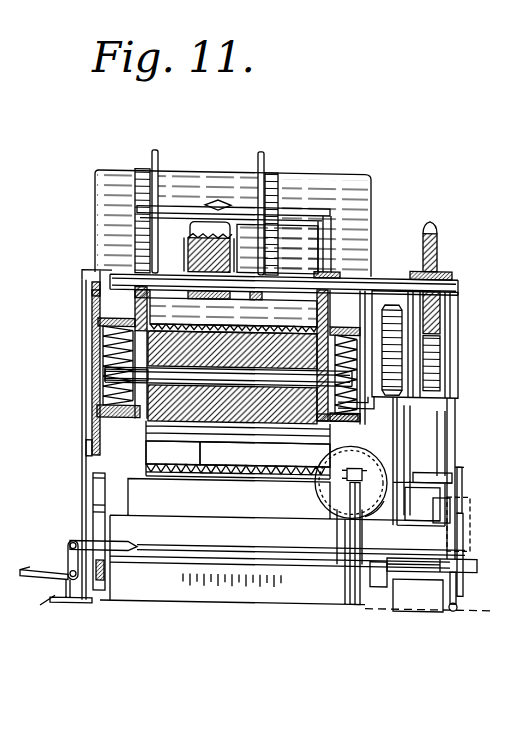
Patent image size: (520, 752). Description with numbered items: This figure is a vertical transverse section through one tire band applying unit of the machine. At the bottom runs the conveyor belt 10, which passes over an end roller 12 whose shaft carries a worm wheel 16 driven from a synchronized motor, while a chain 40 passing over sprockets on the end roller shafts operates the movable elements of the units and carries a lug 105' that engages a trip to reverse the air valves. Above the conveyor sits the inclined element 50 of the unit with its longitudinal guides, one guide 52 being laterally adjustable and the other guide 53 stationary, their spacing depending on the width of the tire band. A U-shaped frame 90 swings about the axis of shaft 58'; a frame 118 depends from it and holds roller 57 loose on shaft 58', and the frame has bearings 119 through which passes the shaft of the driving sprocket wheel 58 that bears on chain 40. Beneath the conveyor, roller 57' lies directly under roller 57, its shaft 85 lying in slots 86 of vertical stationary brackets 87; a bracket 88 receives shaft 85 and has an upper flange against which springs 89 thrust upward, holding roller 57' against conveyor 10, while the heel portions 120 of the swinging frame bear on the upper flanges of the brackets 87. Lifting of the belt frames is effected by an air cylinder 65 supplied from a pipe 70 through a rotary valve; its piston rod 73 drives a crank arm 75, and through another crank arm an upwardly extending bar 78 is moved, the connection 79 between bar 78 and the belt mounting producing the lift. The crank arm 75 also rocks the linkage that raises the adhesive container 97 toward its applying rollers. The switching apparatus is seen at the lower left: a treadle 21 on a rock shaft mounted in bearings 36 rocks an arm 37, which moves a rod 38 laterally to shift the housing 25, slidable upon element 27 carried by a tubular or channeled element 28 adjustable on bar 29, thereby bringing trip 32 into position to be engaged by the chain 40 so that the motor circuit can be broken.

The inclined element 50 is at (118, 172).
The stationary guide 53 is at (158, 150).
The laterally adjustable guide 52 is at (264, 150).
The U-shaped frame 90 is at (315, 206).
The bearings 119 is at (335, 264).
The frame 118 is at (188, 252).
The roller 57 is at (277, 248).
The shaft 58' is at (300, 289).
The sprocket wheel 58 is at (443, 250).
The worm wheel 16 is at (396, 300).
The vertical stationary bracket 87 is at (312, 346).
The slot 86 is at (200, 400).
The shaft 85 is at (106, 378).
The spring 89 is at (110, 368).
The bracket 88 is at (104, 338).
The heel portion 120 is at (92, 310).
The connection 79 is at (84, 283).
The upwardly extending bar 78 is at (86, 448).
The roller 57' is at (156, 448).
The end roller 12 is at (150, 455).
The conveyor belt 10 is at (228, 475).
The container 97 is at (128, 490).
The rod 38 is at (128, 541).
The arm 37 is at (68, 552).
The treadle 21 is at (34, 576).
The bearing 36 is at (54, 604).
The cylinder 65 is at (352, 444).
The piston rod 73 is at (347, 470).
The crank arm 75 is at (345, 500).
The lug 105' is at (450, 459).
The chain 40 is at (422, 504).
The trip 32 is at (463, 474).
The housing 25 is at (463, 528).
The element 27 is at (470, 568).
The tubular or channeled element 28 is at (382, 584).
The bar 29 is at (420, 607).
The pipe 70 is at (457, 604).